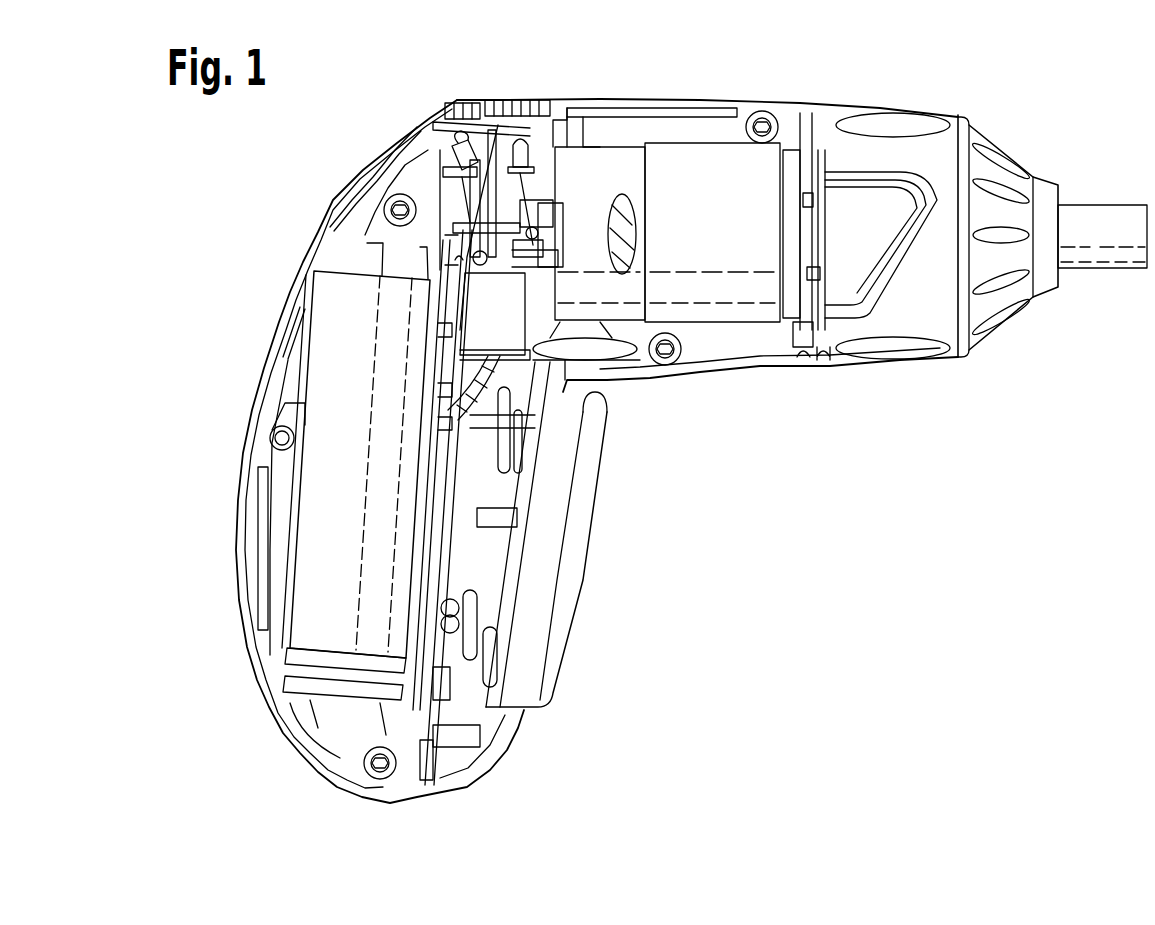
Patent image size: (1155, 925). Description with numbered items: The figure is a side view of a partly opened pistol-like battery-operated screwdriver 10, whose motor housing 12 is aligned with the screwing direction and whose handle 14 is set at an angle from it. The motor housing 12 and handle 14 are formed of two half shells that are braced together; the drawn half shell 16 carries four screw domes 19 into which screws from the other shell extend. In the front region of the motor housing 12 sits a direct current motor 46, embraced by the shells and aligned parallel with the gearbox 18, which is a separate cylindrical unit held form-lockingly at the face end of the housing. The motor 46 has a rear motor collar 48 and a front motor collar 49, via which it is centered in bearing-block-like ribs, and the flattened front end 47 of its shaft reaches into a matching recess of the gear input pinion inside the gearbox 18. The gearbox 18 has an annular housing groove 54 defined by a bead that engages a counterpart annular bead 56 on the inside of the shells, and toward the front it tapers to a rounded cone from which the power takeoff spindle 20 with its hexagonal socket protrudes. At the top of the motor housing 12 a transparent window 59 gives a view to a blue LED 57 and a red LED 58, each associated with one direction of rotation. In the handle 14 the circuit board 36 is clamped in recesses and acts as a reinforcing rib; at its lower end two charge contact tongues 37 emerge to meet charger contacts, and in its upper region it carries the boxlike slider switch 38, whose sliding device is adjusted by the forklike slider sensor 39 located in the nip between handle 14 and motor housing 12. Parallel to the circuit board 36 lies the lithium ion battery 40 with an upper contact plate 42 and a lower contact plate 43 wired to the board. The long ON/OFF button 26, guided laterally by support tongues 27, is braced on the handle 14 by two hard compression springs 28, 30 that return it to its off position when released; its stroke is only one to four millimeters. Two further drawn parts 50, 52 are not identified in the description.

The battery-operated screwdriver 10 is at (1018, 86).
The motor housing 12 is at (650, 103).
The handle 14 is at (244, 455).
The half shell 16 is at (688, 112).
The gearbox 18 is at (850, 147).
The screw domes 19 is at (763, 112).
The power takeoff spindle 20 is at (1103, 222).
The ON/OFF button 26 is at (537, 530).
The support tongues 27 is at (500, 517).
The compression spring 28 is at (520, 440).
The compression spring 30 is at (493, 650).
The circuit board 36 is at (423, 745).
The charge contact tongues 37 is at (447, 747).
The slider switch 38 is at (470, 305).
The slider sensor 39 is at (597, 352).
The battery 40 is at (347, 340).
The contact plate 42 is at (343, 710).
The contact plate 43 is at (417, 253).
The direct current motor 46 is at (587, 180).
The front end of the motor shaft 47 is at (790, 237).
The rear motor collar 48 is at (770, 217).
The front motor collar 49 is at (543, 213).
The motor bracket 50 is at (817, 190).
The motor mount 52 is at (583, 127).
The annular housing groove 54 is at (802, 357).
The counterpart annular bead 56 is at (823, 357).
The LED 57 is at (460, 153).
The LED 58 is at (520, 150).
The transparent window 59 is at (450, 95).